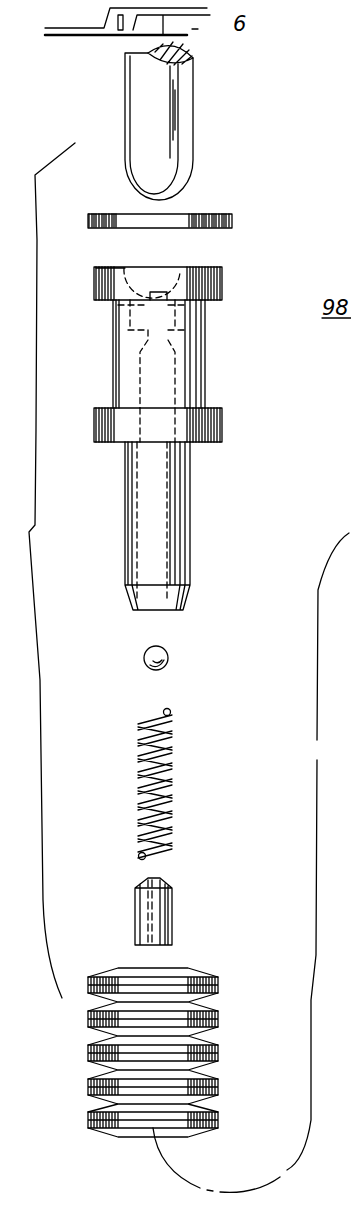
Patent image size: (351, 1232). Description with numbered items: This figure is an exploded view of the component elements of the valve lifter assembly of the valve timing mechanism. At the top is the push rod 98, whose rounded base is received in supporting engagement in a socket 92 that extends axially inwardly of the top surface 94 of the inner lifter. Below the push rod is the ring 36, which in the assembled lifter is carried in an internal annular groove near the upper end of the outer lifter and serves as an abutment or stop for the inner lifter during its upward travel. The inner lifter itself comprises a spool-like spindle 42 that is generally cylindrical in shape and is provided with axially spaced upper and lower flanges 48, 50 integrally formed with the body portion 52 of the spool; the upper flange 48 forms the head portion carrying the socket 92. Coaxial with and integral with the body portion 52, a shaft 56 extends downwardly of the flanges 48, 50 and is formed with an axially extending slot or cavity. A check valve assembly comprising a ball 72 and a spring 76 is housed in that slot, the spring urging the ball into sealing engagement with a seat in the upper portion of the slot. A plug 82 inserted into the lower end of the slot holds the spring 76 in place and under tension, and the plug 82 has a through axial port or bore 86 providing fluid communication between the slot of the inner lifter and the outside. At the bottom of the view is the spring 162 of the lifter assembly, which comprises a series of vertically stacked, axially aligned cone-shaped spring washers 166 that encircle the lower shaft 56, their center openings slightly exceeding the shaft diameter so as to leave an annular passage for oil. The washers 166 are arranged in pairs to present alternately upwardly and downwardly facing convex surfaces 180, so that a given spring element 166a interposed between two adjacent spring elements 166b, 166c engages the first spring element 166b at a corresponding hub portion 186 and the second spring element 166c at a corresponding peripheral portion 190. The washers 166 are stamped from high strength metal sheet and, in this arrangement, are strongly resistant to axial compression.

The push rod 98 is at (180, 112).
The ring 36 is at (232, 220).
The top surface 94 is at (106, 267).
The socket 92 is at (172, 265).
The upper flange 48 is at (215, 287).
The spool-like spindle 42 is at (86, 357).
The body portion 52 is at (188, 368).
The lower flange 50 is at (210, 430).
The shaft 56 is at (178, 513).
The ball 72 is at (168, 652).
The spring 76 is at (172, 802).
The plug 82 is at (160, 915).
The axial port 86 is at (132, 912).
The spring 162 is at (222, 1019).
The cone-shaped spring washers 166 is at (218, 985).
The spring element 166a is at (215, 1075).
The first spring element 166b is at (218, 1026).
The second spring element 166c is at (217, 1090).
The convex surface 180 is at (210, 1107).
The hub portion 186 is at (118, 1038).
The peripheral portion 190 is at (93, 1053).